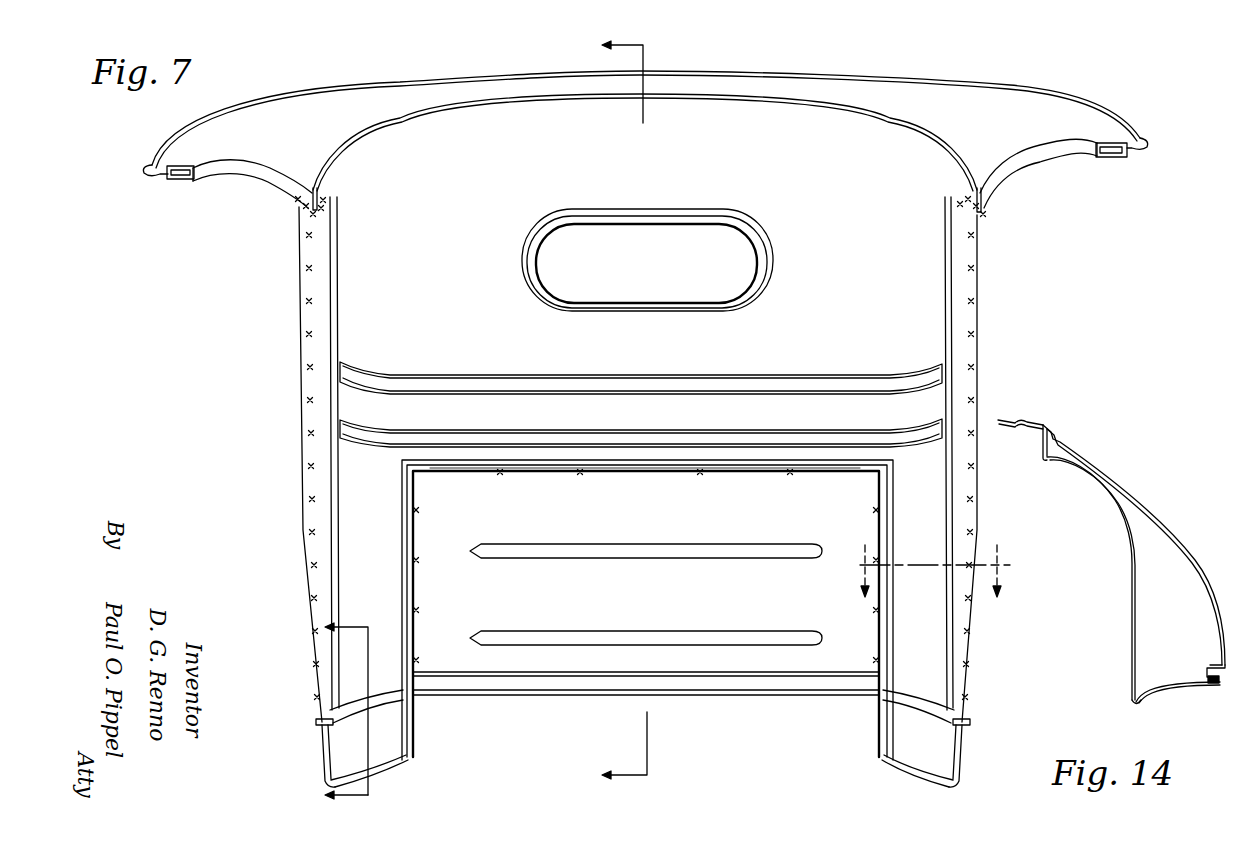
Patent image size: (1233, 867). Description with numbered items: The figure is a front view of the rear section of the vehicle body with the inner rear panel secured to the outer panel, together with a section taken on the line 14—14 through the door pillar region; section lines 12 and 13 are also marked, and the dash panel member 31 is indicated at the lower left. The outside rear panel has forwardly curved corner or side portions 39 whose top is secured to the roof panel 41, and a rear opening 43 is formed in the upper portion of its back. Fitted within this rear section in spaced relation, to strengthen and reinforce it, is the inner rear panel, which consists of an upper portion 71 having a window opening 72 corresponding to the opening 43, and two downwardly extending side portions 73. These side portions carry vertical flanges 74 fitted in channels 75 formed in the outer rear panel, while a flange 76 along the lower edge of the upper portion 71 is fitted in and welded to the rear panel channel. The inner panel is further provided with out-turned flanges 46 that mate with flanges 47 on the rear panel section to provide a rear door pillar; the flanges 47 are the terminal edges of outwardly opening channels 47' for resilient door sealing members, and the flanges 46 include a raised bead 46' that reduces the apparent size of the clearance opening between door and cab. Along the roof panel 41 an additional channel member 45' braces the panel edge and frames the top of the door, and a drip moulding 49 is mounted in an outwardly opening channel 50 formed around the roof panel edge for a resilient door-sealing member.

In FIG. 7, the section line 12- 12 is at (640, 411).
In FIG. 7, the section line 13- 13 is at (362, 704).
In FIG. 7, the section line 14- 14 is at (935, 558).
In FIG. 7, the dash panel member 31 is at (364, 795).
In FIG. 14, the forwardly curved corner or side portions 39 is at (1165, 511).
In FIG. 7, the roof panel 41 is at (857, 74).
In FIG. 7, the rear opening 43 is at (712, 232).
In FIG. 7, the additional channel member 45' is at (645, 188).
In FIG. 7, the out-turned flanges 46 is at (661, 492).
In FIG. 14, the out-turned flanges 46 is at (1178, 699).
In FIG. 7, the raised bead 46' is at (586, 444).
In FIG. 14, the raised bead 46' is at (1094, 585).
In FIG. 14, the flanges 47 is at (1219, 705).
In FIG. 14, the outwardly opening channels 47' is at (1214, 656).
In FIG. 7, the drip moulding 49 is at (148, 170).
In FIG. 7, the outwardly opening channel 50 is at (167, 183).
In FIG. 7, the upper portion 71 is at (647, 174).
In FIG. 7, the window opening 72 is at (733, 273).
In FIG. 7, the downwardly extending side portions 73 is at (380, 540).
In FIG. 7, the vertical flanges 74 is at (415, 494).
In FIG. 14, the vertical flanges 74 is at (1044, 456).
In FIG. 14, the channels 75 is at (1045, 424).
In FIG. 7, the flange 76 is at (683, 472).